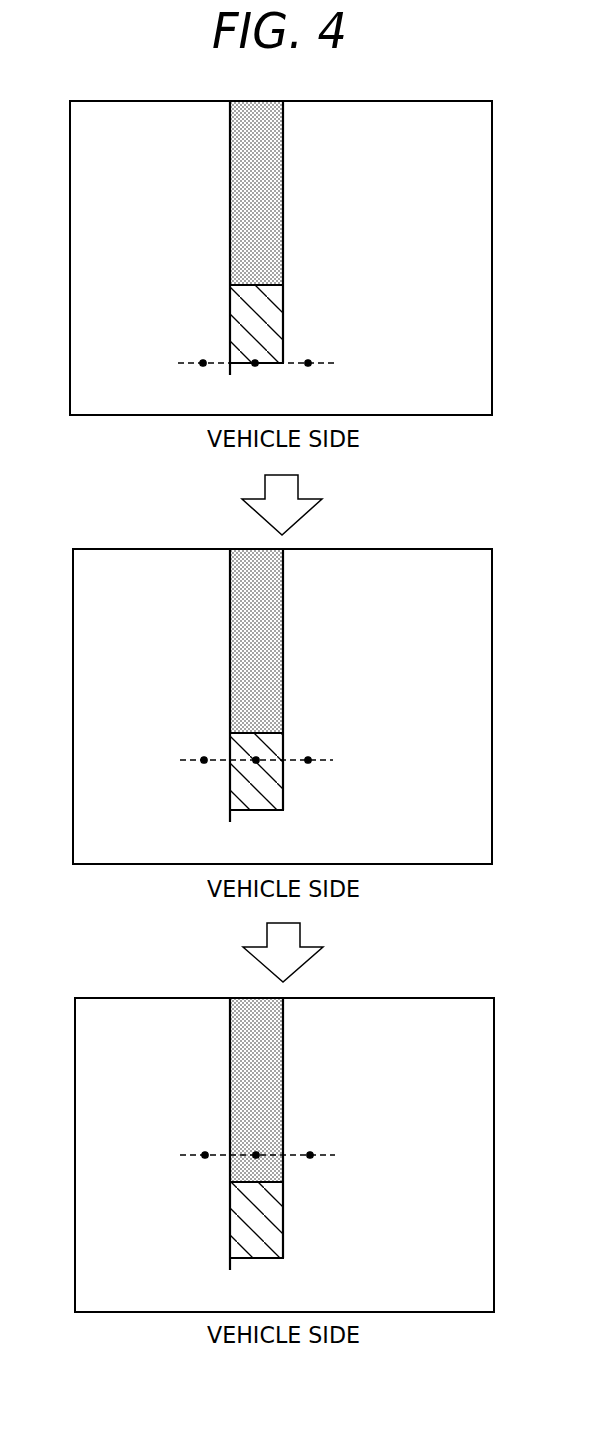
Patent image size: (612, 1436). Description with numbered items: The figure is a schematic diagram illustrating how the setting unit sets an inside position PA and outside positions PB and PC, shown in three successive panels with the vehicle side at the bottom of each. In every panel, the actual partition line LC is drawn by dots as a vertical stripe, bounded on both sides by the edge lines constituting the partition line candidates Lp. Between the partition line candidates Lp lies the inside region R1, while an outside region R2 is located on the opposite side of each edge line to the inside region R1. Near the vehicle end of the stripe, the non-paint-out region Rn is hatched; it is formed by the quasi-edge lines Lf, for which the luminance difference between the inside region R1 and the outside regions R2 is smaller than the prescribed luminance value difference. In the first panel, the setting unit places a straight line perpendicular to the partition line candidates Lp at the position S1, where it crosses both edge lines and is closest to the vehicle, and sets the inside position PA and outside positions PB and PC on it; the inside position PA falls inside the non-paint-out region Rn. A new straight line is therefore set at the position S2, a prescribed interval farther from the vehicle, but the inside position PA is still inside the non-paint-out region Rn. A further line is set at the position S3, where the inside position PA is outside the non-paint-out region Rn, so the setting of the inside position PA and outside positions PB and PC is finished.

The actual partition line LC is at (268, 136).
The inside region R1 is at (284, 198).
The outside region R2 is at (168, 266).
The partition line candidate Lp is at (229, 215).
The edge lines (quasi-edge lines) Lf is at (230, 320).
The non-paint-out region Rn is at (267, 355).
The position S1 is at (318, 360).
The position S2 is at (333, 762).
The position S3 is at (333, 1153).
The outside position PC is at (203, 368).
The inside position PA is at (255, 368).
The outside position PB is at (308, 368).